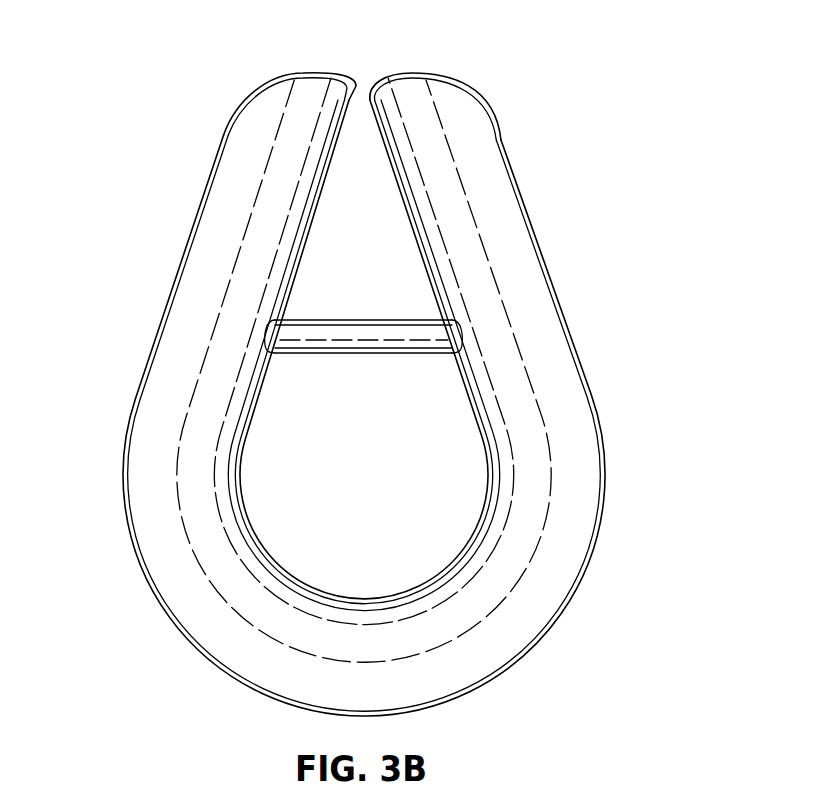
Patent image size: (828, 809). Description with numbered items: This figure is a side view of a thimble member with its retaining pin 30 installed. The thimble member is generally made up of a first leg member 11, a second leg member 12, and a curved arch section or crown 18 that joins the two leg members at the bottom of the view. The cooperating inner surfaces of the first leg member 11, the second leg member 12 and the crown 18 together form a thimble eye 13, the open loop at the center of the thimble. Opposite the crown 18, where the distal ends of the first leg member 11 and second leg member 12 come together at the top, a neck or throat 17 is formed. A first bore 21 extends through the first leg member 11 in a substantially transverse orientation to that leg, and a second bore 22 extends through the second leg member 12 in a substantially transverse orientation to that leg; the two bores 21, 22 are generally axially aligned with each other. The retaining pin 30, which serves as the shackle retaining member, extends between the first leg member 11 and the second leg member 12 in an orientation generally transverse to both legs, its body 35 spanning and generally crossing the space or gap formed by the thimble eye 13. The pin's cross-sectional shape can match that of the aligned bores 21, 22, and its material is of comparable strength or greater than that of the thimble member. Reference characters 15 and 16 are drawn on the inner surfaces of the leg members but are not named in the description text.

The first leg member 11 is at (517, 273).
The second leg member 12 is at (207, 273).
The thimble eye 13 is at (363, 497).
The left arm inner surface 15 is at (308, 258).
The right arm inner surface 16 is at (418, 258).
The throat 17 is at (359, 90).
The crown 18 is at (387, 694).
The first bore 21 is at (458, 353).
The second bore 22 is at (270, 355).
The retaining pin 30 is at (364, 359).
The body 35 is at (365, 353).